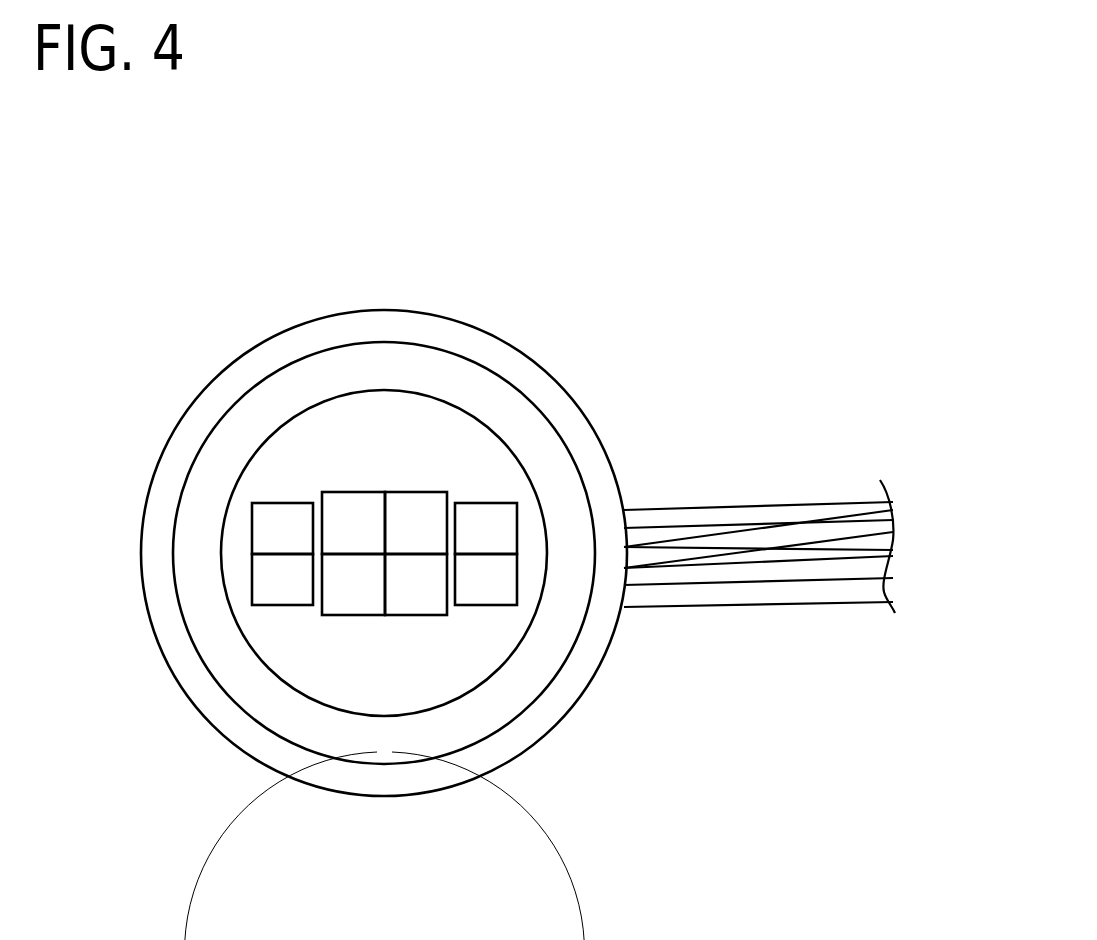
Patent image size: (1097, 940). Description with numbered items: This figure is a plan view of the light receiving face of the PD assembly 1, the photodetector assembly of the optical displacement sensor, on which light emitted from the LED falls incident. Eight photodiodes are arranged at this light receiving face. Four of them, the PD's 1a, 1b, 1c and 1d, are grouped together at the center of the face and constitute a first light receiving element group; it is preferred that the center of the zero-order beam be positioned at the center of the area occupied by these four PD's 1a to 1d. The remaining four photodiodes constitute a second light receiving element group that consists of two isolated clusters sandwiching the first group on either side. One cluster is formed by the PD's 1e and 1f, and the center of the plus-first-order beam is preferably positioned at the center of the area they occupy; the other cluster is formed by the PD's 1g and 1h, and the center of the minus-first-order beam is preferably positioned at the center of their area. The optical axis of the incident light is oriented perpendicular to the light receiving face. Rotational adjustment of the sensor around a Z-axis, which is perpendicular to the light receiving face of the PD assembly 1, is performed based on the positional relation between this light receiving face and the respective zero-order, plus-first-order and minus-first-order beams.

The PD assembly 1 is at (633, 387).
The PD 1a is at (403, 522).
The PD 1b is at (363, 522).
The PD 1c is at (353, 593).
The PD 1d is at (412, 593).
The PD 1e is at (502, 585).
The PD 1f is at (503, 522).
The PD 1g is at (267, 582).
The PD 1h is at (267, 523).